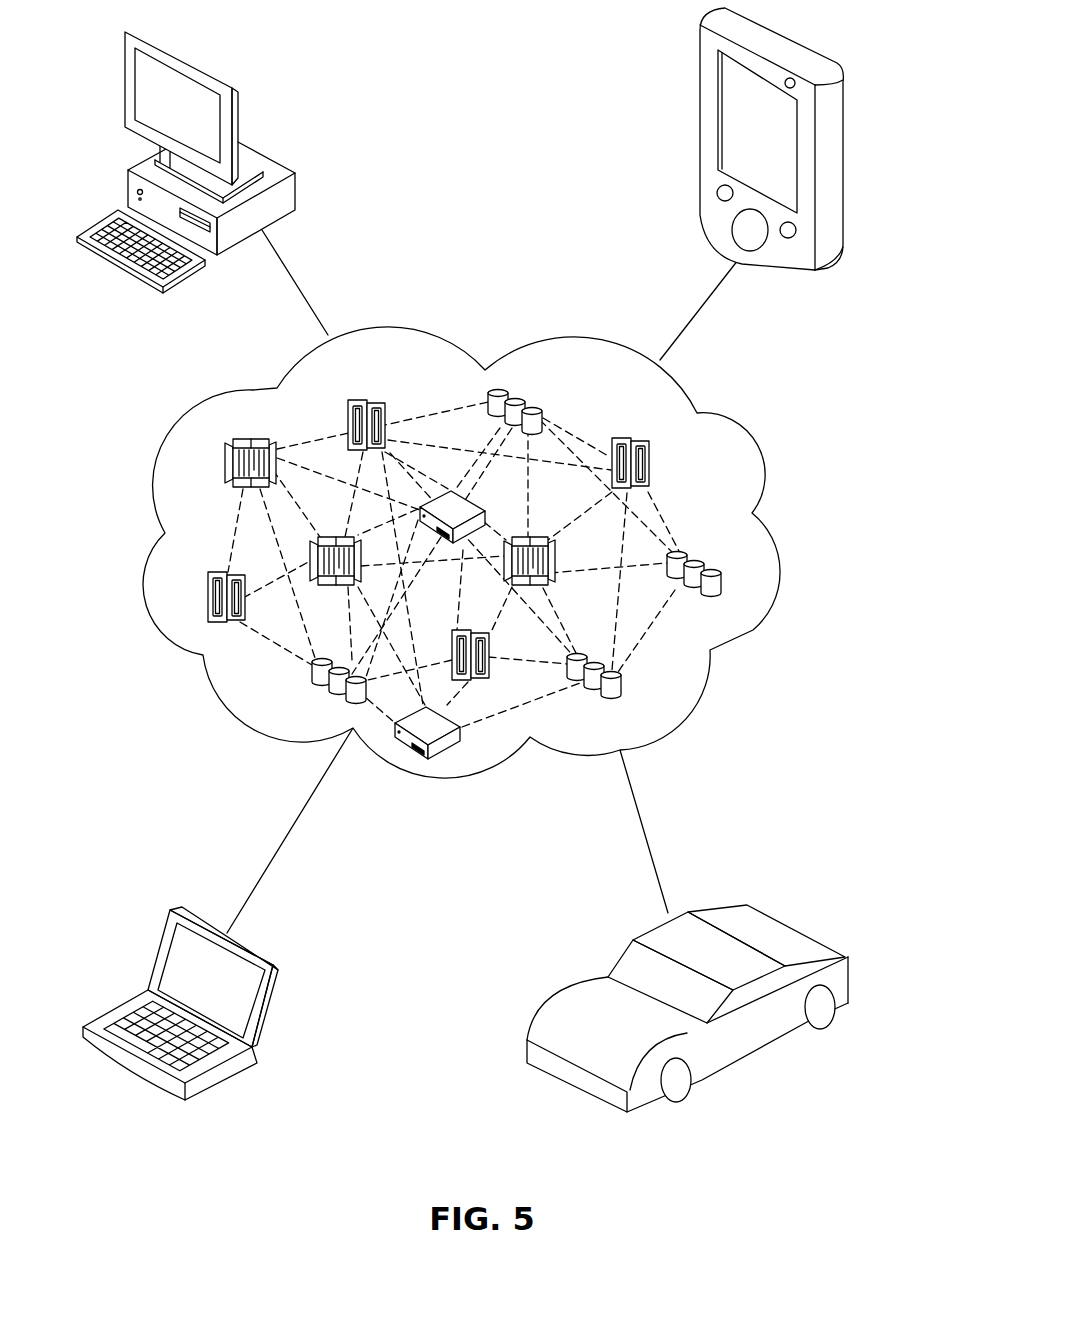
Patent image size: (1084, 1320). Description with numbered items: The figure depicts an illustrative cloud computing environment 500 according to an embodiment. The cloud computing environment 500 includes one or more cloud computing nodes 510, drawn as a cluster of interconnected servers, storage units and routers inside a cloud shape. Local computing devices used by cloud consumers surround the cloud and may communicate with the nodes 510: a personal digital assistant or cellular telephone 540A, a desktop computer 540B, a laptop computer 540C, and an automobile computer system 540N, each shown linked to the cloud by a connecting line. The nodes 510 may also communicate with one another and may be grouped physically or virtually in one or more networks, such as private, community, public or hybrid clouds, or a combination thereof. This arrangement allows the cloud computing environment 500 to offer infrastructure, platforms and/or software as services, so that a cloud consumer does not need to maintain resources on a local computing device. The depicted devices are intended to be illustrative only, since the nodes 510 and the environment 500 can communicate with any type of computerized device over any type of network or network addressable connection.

The cloud computing environment 500 is at (753, 632).
The cloud computing nodes 510 is at (712, 489).
The personal digital assistant (PDA) or cellular telephone 540A is at (700, 85).
The desktop computer 540B is at (295, 188).
The laptop computer 540C is at (280, 978).
The automobile computer system 540N is at (850, 977).